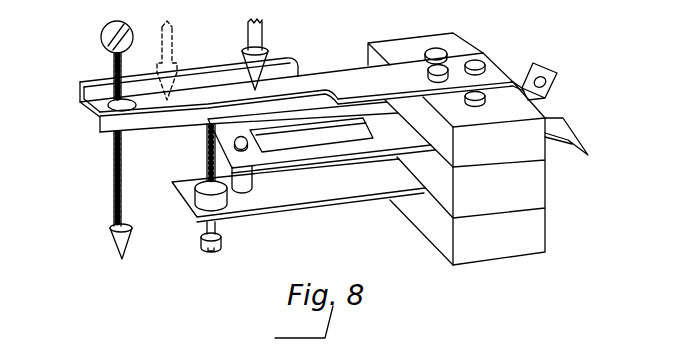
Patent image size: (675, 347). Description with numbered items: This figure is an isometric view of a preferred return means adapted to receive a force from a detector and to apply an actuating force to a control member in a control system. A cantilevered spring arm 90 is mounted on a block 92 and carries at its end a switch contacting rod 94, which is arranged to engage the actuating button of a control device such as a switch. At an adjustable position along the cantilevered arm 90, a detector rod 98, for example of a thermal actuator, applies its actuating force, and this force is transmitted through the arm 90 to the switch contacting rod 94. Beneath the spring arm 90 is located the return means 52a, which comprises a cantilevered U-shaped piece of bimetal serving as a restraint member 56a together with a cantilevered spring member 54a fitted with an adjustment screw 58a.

The cantilevered spring arm 90 is at (320, 80).
The block 92 is at (408, 46).
The switch contacting rod 94 is at (114, 178).
The detector rod 98 is at (261, 26).
The return means 52a is at (178, 132).
The cantilevered spring member 54a is at (356, 193).
The restraint member 56a is at (318, 157).
The adjustment screw 58a is at (205, 249).